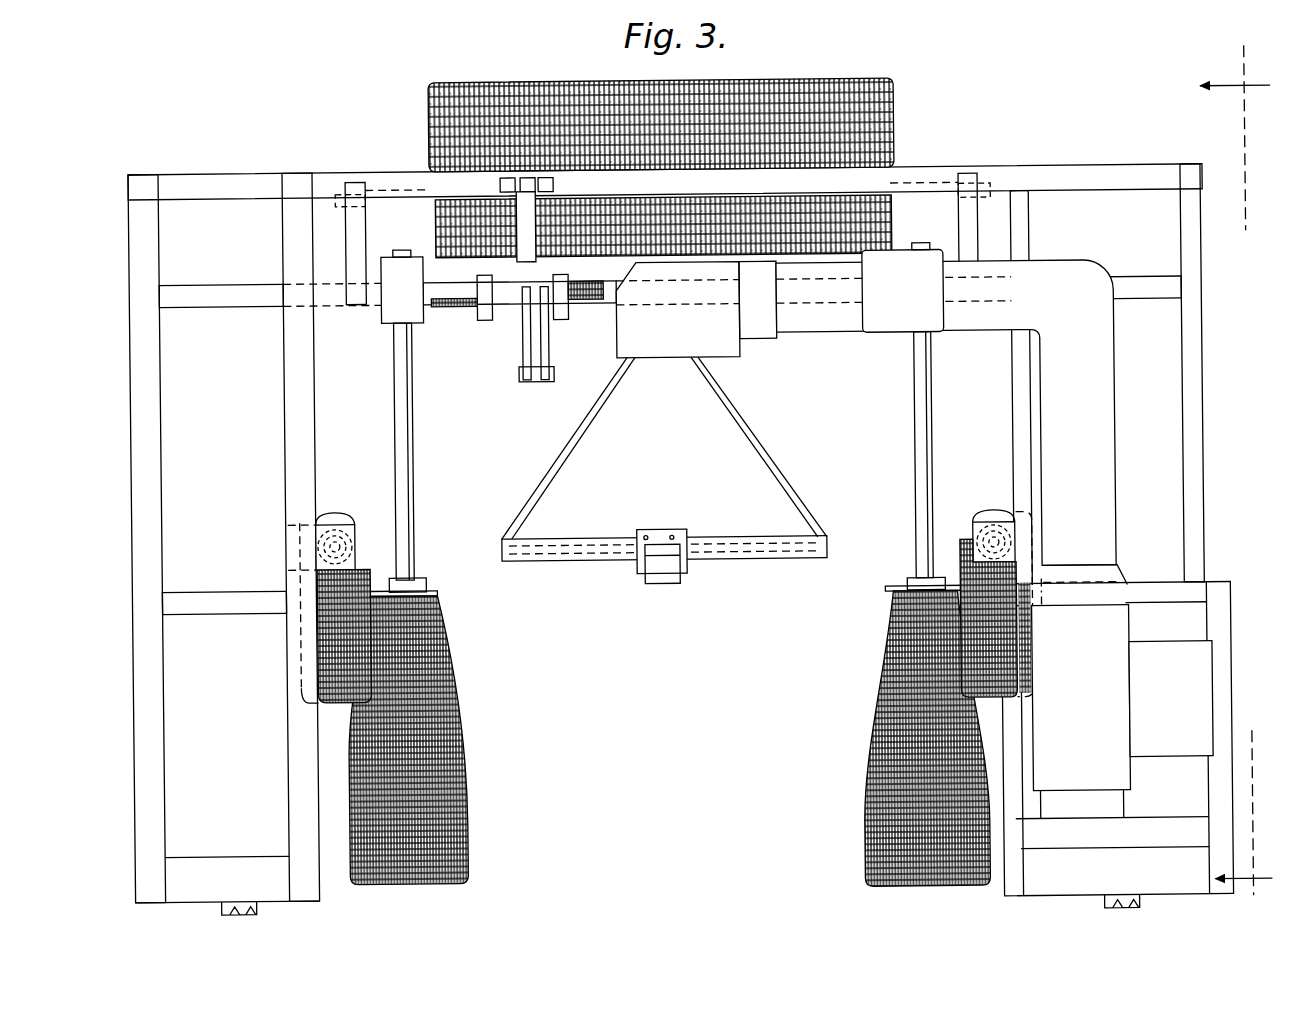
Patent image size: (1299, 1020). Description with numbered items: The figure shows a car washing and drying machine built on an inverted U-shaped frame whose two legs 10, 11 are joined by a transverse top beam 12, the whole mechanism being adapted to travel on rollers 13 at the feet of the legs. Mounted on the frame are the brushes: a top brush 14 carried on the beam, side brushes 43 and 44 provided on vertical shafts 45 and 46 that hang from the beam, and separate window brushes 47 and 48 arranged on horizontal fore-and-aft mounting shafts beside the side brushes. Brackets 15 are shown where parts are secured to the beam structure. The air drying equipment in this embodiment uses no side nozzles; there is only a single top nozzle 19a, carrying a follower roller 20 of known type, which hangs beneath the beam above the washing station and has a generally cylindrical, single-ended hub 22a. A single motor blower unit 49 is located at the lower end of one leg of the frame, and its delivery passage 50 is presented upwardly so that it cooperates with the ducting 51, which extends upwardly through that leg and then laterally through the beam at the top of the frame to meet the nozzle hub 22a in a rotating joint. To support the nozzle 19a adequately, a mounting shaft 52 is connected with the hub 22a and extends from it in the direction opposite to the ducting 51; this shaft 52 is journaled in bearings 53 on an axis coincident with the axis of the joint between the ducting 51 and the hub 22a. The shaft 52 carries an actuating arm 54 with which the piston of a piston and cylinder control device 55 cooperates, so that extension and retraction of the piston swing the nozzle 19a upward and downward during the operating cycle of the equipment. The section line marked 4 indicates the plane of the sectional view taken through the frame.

The section line 4- 4 is at (1248, 470).
The leg 10 is at (122, 415).
The leg 11 is at (1203, 396).
The top beam 12 is at (310, 167).
The rollers 13 is at (242, 911).
The top brush 14 is at (761, 107).
The mounting brackets 15 is at (344, 234).
The top nozzle 19a is at (737, 446).
The follower roller 20 is at (656, 581).
The nozzle hub 22a is at (716, 351).
The side brush 43 is at (454, 743).
The side brush 44 is at (874, 713).
The vertical shaft 45 is at (410, 448).
The vertical shaft 46 is at (913, 393).
The window brush 47 is at (366, 521).
The window brush 48 is at (951, 539).
The motor blower unit 49 is at (1110, 628).
The delivery passage 50 is at (1106, 585).
The ducting 51 is at (1099, 425).
The mounting shaft 52 is at (569, 305).
The bearings 53 is at (483, 326).
The actuating arm 54 is at (543, 379).
The piston and cylinder control device 55 is at (514, 232).